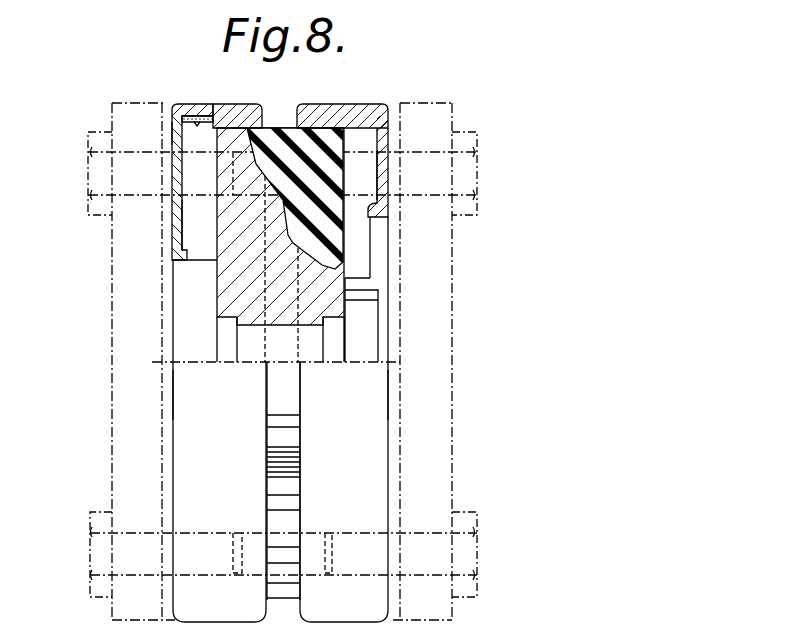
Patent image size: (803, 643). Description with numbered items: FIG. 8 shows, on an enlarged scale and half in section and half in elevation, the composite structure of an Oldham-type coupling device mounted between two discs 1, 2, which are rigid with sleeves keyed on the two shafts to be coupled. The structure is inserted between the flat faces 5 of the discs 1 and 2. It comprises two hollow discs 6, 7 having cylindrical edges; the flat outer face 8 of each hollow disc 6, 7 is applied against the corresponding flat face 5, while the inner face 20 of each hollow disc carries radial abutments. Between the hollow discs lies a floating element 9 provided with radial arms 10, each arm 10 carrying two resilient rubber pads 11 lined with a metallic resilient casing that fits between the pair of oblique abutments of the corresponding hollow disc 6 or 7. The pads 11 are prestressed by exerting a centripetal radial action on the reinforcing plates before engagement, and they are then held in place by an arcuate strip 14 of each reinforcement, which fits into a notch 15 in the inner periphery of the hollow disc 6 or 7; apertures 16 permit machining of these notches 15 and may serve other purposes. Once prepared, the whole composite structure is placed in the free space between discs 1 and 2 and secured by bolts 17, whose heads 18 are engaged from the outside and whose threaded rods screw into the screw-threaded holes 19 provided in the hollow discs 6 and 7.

The disc 1 is at (123, 102).
The disc 2 is at (430, 100).
The flat face 5 is at (170, 113).
The hollow disc 6 is at (187, 472).
The hollow disc 7 is at (377, 470).
The outer face 8 is at (175, 395).
The floating element 9 is at (333, 338).
The radial arm 10 is at (227, 292).
The resilient pad 11 is at (335, 132).
The arcuate strip 14 is at (207, 115).
The notch 15 is at (188, 113).
The aperture 16 is at (177, 132).
The bolt 17 is at (200, 572).
The bolt head 18 is at (100, 553).
The screw-threaded hole 19 is at (246, 531).
The inner face 20 is at (192, 233).